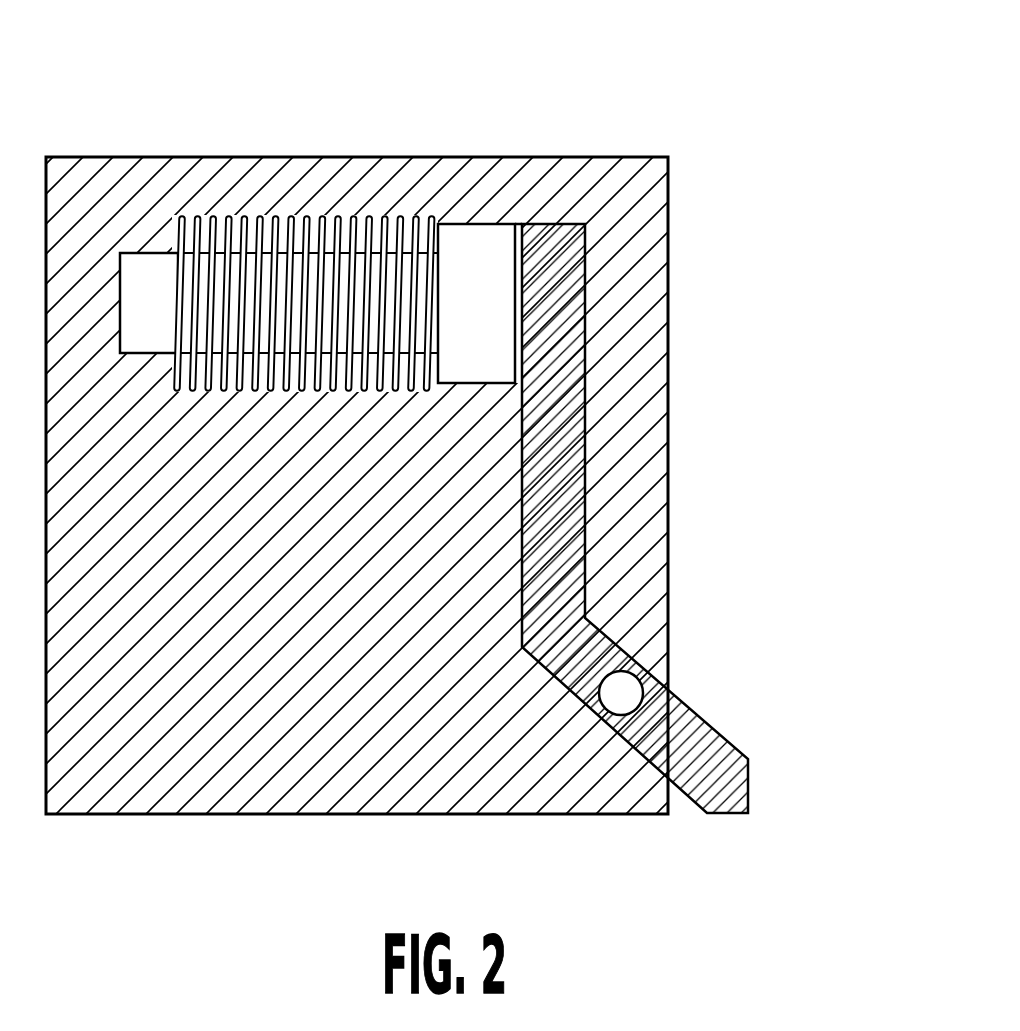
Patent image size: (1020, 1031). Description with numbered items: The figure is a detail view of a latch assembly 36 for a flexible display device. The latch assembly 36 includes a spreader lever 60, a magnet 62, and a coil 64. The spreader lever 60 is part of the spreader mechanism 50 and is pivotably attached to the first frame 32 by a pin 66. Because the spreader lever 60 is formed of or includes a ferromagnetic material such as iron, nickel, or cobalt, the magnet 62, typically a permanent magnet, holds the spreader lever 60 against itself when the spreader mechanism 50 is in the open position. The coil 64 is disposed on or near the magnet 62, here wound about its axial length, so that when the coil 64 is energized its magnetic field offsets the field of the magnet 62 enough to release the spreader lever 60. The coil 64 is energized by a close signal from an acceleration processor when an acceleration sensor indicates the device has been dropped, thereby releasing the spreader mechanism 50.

The first frame 32 is at (93, 796).
The latch assembly 36 is at (452, 453).
The spreader mechanism 50 is at (690, 518).
The spreader lever 60 is at (585, 323).
The magnet 62 is at (473, 228).
The coil 64 is at (240, 215).
The pin 66 is at (627, 690).